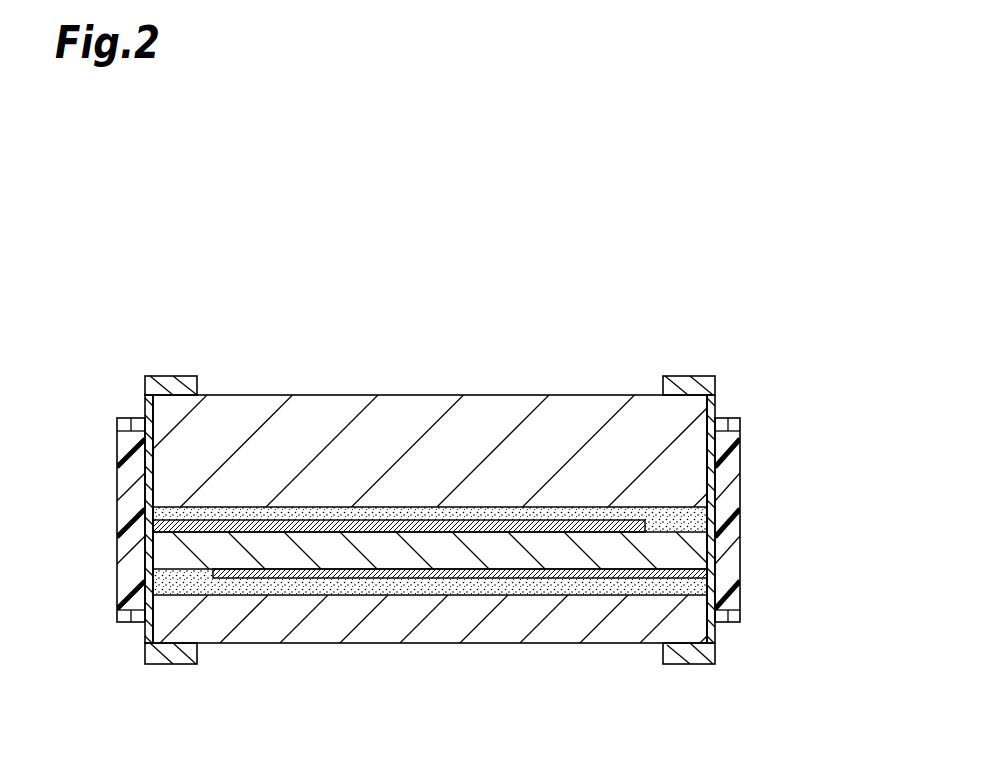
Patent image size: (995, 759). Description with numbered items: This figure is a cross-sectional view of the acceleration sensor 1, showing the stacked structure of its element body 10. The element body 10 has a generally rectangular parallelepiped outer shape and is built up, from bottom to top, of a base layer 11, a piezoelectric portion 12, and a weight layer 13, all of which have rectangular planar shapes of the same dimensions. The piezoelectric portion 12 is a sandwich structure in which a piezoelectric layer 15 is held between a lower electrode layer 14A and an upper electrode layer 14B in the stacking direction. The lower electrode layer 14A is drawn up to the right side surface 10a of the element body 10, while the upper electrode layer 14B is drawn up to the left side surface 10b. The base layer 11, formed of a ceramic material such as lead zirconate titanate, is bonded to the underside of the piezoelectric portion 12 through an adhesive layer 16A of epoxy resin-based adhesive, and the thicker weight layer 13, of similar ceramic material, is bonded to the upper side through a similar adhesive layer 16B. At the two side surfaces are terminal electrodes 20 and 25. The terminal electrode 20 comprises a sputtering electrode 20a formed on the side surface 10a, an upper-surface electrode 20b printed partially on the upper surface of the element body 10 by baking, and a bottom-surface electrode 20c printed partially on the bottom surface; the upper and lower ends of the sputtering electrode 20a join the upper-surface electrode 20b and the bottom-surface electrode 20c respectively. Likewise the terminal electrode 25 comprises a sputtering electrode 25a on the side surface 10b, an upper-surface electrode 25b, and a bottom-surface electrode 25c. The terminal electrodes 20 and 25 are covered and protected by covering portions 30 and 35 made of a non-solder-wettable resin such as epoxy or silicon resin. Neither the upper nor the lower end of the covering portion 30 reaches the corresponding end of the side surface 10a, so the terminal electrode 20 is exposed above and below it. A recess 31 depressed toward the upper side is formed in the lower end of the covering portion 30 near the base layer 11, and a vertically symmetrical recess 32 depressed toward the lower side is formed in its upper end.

The multilayer capacitor 1 is at (211, 204).
The element body 10 is at (266, 393).
The side surface 10a is at (708, 636).
The side surface 10b is at (151, 636).
The base layer 11 is at (493, 644).
The piezoelectric portion 12 is at (820, 503).
The weight layer 13 is at (488, 398).
The lower electrode layer 14A is at (700, 573).
The upper electrode layer 14B is at (650, 527).
The piezoelectric layer 15 is at (697, 552).
The adhesive layer 16A is at (677, 591).
The adhesive layer 16B is at (670, 507).
The terminal electrode 20 is at (699, 375).
The sputtering electrode 20a is at (717, 413).
The upper-surface electrode 20b is at (673, 376).
The bottom-surface electrode 20c is at (678, 664).
The terminal electrode 25 is at (153, 375).
The sputtering electrode 25a is at (145, 412).
The upper-surface electrode 25b is at (173, 376).
The bottom-surface electrode 25c is at (173, 664).
The covering portion 30 is at (740, 453).
The recess 31 is at (735, 622).
The recess 32 is at (730, 420).
The covering portion 35 is at (117, 455).